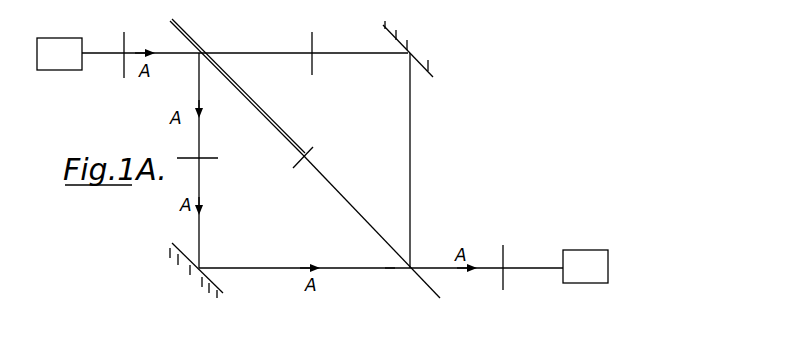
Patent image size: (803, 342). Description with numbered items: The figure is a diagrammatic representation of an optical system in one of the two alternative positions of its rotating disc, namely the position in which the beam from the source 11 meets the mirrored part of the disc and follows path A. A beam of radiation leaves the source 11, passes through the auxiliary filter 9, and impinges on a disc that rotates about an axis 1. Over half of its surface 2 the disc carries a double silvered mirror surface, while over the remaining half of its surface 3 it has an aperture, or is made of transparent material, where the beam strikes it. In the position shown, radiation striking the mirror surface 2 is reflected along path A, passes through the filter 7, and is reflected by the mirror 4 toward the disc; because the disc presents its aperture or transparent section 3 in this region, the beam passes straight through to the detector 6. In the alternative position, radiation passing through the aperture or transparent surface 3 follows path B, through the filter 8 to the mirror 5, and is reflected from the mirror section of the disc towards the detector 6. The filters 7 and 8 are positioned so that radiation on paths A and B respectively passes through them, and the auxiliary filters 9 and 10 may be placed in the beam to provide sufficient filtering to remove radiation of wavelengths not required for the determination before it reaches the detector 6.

The axis 1 is at (308, 152).
The double silvered mirror surface 2 is at (197, 46).
The aperture or transparent surface 3 is at (392, 253).
The mirror 4 is at (180, 265).
The mirror 5 is at (416, 52).
The detector 6 is at (582, 271).
The filter 7 is at (179, 158).
The filter 8 is at (312, 44).
The auxiliary filter 9 is at (122, 70).
The auxiliary filter 10 is at (503, 256).
The source 11 is at (64, 58).